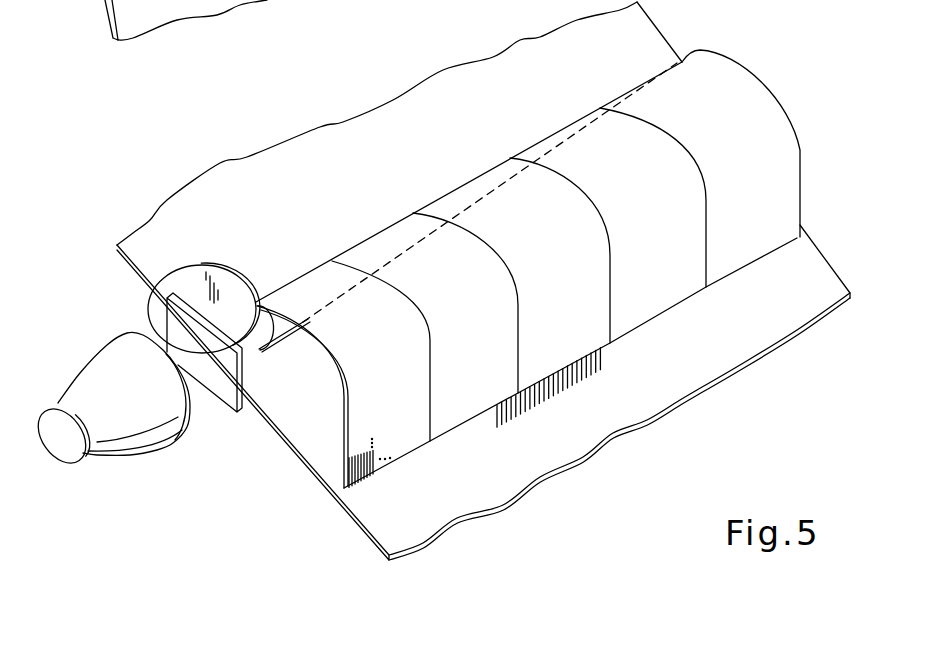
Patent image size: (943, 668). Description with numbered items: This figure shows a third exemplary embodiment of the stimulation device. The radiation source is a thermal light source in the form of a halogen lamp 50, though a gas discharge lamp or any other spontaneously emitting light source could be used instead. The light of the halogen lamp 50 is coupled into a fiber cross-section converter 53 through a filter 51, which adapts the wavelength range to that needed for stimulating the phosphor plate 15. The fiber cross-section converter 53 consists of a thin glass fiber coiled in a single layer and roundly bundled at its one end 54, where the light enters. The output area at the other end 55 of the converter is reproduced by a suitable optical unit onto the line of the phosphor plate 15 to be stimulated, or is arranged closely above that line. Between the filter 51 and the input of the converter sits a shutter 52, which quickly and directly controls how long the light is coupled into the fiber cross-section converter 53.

The phosphor plate 15 is at (562, 445).
The halogen lamp 50 is at (147, 440).
The filter 51 is at (222, 390).
The shutter 52 is at (148, 303).
The fiber cross-section converter 53 is at (373, 375).
The one end 54 is at (262, 342).
The other end 55 is at (447, 438).